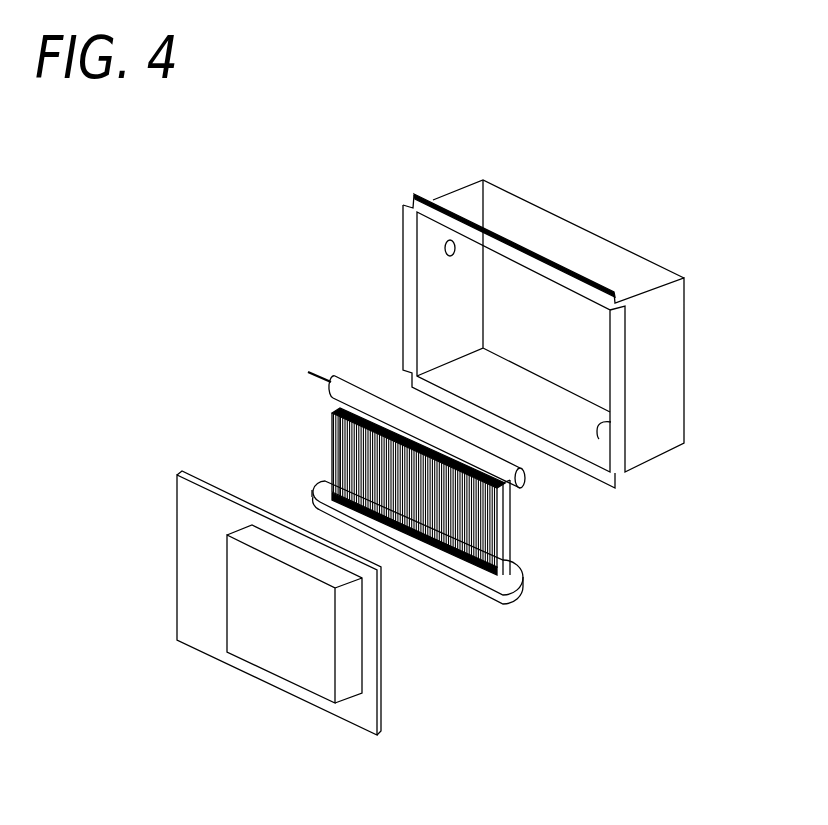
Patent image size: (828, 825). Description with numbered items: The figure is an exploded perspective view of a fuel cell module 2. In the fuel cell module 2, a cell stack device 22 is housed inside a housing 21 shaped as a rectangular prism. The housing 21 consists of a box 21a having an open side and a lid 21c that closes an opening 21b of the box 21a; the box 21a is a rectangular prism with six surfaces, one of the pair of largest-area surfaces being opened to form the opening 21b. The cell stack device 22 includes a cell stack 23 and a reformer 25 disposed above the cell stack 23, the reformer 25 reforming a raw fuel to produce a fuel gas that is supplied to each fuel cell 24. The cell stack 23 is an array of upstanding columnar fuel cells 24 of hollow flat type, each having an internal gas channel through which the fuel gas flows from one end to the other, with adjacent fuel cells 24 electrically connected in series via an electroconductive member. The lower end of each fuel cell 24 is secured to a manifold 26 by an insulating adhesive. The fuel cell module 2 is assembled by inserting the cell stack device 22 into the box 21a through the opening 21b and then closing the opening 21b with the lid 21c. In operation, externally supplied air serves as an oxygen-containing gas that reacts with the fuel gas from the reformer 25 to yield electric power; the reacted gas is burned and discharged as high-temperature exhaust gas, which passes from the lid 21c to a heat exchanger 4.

The fuel cell module 2 is at (275, 162).
The heat exchanger 4 is at (277, 648).
The housing 21 is at (557, 240).
The box 21a is at (495, 202).
The opening 21b is at (599, 439).
The lid 21c is at (188, 556).
The cell stack device 22 is at (273, 357).
The cell stack 23 is at (493, 530).
The fuel cell 24 is at (338, 455).
The reformer 25 is at (368, 405).
The manifold 26 is at (430, 557).